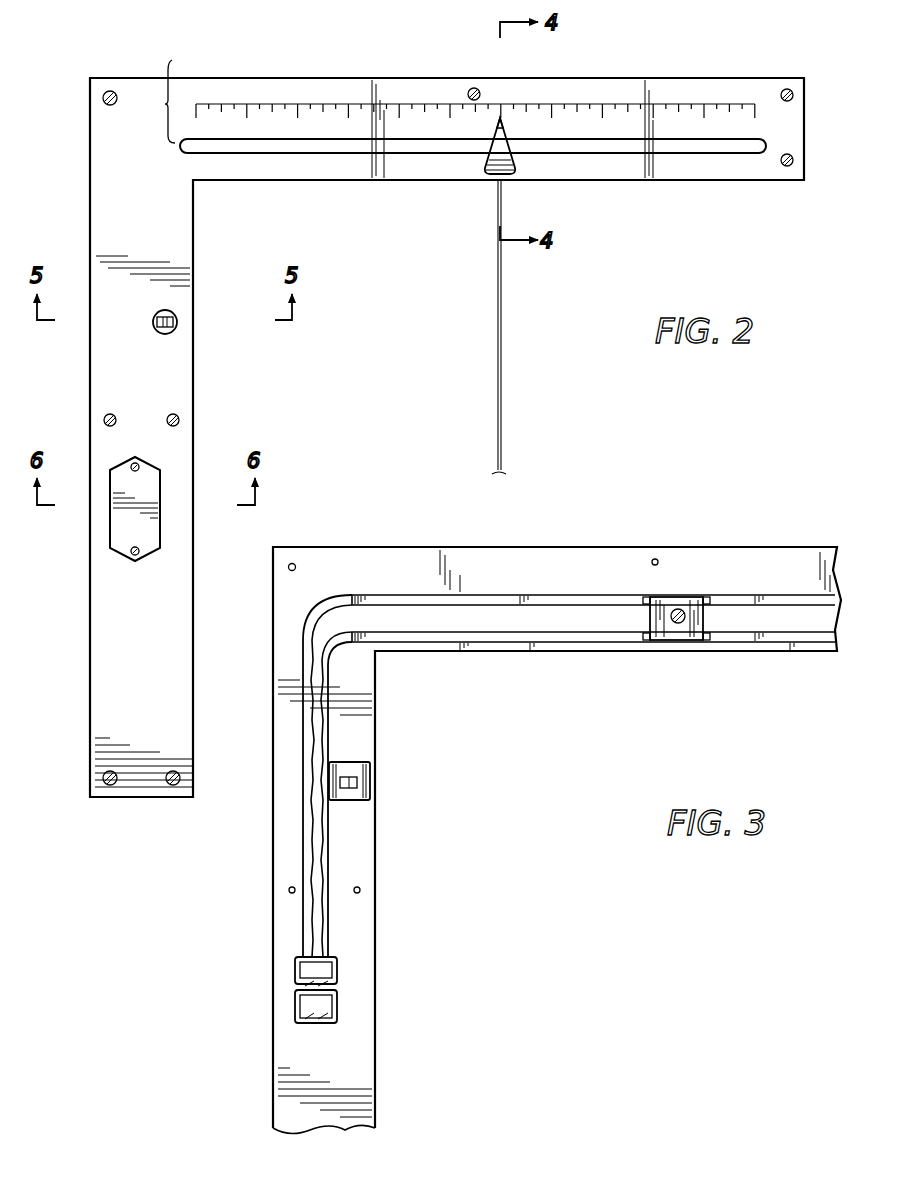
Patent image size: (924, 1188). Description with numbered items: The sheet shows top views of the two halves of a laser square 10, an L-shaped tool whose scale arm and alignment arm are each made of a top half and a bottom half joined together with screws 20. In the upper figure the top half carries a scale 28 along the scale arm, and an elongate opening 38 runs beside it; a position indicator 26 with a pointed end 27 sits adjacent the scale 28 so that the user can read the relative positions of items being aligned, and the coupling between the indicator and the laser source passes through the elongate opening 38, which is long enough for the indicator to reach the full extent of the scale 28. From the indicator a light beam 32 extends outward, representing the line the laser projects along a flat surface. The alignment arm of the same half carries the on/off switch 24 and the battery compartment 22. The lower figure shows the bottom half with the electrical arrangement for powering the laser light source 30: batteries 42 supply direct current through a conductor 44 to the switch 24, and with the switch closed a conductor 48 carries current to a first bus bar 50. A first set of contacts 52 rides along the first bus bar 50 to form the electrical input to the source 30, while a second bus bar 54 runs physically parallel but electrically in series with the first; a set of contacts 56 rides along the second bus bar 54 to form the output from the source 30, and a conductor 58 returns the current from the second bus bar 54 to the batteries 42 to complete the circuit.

In FIG. 2, the laser square 10 is at (63, 190).
In FIG. 3, the laser square 10 is at (481, 725).
In FIG. 2, the screws 20 is at (112, 91).
In FIG. 2, the battery compartment 22 is at (113, 540).
In FIG. 2, the on/off switch 24 is at (172, 332).
In FIG. 3, the on/off switch 24 is at (365, 775).
In FIG. 2, the position indicator 26 is at (496, 176).
In FIG. 2, the pointed end 27 is at (500, 118).
In FIG. 2, the scale 28 is at (166, 106).
In FIG. 3, the laser light source 30 is at (678, 645).
In FIG. 2, the light beam 32 is at (503, 377).
In FIG. 2, the elongate opening 38 is at (220, 146).
In FIG. 3, the batteries 42 is at (333, 968).
In FIG. 3, the conductor 44 is at (325, 848).
In FIG. 3, the conductor 48 is at (322, 693).
In FIG. 3, the first bus bar 50 is at (548, 644).
In FIG. 3, the first set of contacts 52 is at (647, 642).
In FIG. 3, the second bus bar 54 is at (548, 596).
In FIG. 3, the set of contacts 56 is at (647, 596).
In FIG. 3, the conductor 58 is at (303, 790).